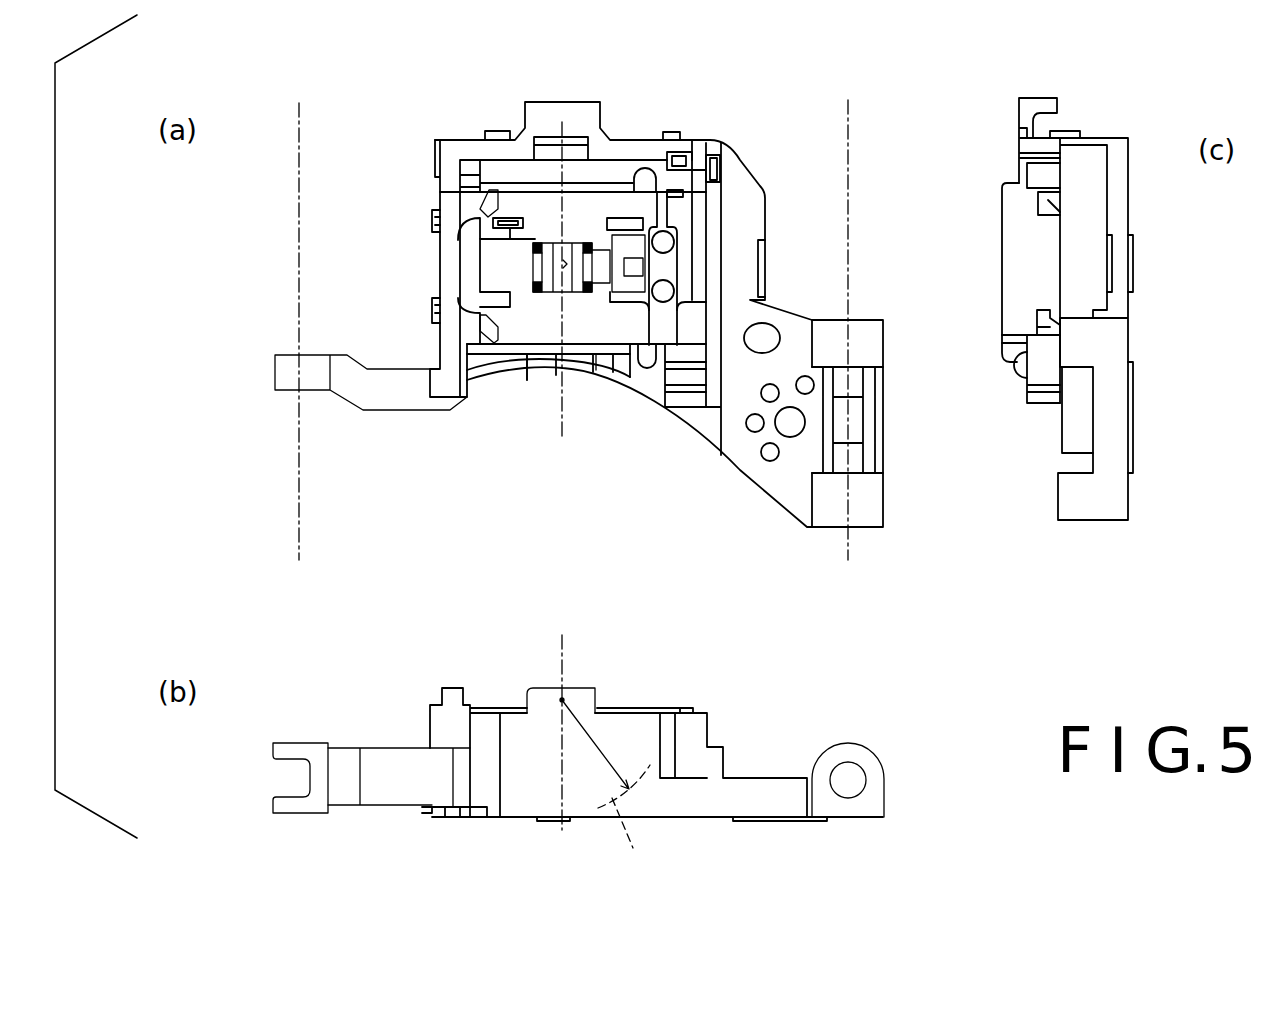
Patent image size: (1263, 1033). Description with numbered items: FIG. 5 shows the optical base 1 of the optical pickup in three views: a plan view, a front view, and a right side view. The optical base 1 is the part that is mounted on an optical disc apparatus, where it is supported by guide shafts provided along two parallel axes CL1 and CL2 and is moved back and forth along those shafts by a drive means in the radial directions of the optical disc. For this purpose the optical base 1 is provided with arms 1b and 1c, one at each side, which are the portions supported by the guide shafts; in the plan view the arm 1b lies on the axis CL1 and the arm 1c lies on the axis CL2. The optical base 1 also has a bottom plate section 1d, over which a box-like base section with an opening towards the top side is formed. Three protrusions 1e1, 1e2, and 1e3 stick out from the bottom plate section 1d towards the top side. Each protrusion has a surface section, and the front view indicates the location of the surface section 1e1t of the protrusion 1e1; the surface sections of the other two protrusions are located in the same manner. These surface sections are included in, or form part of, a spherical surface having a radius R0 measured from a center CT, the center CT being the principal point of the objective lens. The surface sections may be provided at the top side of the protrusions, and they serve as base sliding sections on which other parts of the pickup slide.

The optical base 1 is at (742, 472).
The arm 1b is at (282, 375).
The arm 1c is at (868, 503).
The bottom plate section 1d is at (608, 322).
The protrusion 1e1 is at (628, 262).
The protrusion 1e2 is at (488, 333).
The protrusion 1e3 is at (487, 198).
The surface section 1e1t is at (635, 820).
The center CT is at (530, 267).
The axis CL1 is at (300, 185).
The axis CL2 is at (848, 185).
The radius R0 is at (593, 740).